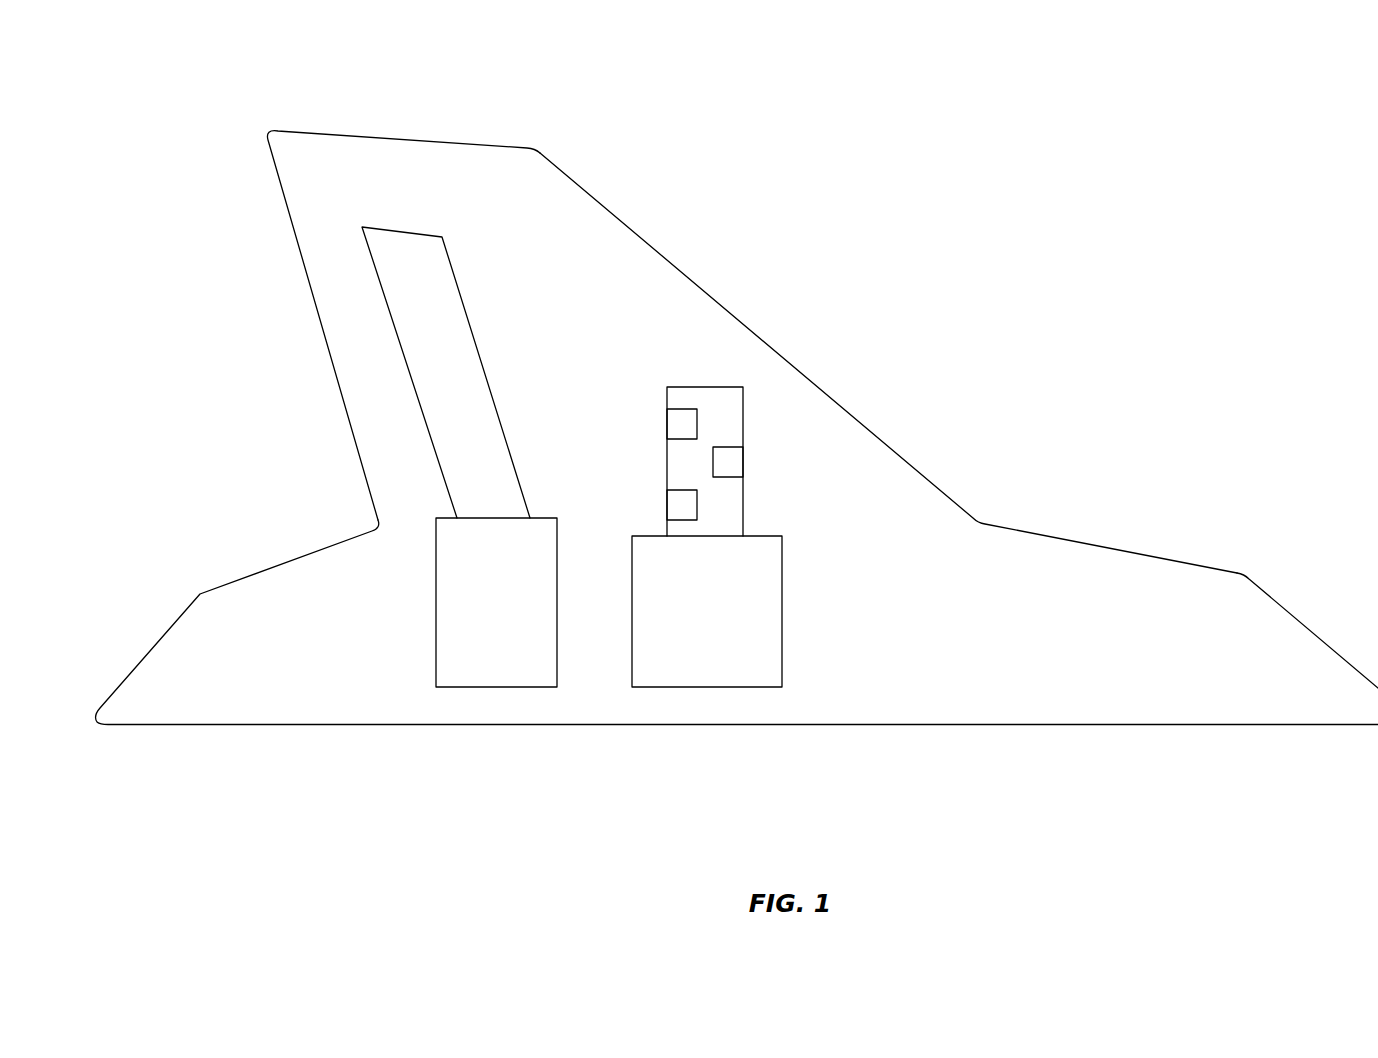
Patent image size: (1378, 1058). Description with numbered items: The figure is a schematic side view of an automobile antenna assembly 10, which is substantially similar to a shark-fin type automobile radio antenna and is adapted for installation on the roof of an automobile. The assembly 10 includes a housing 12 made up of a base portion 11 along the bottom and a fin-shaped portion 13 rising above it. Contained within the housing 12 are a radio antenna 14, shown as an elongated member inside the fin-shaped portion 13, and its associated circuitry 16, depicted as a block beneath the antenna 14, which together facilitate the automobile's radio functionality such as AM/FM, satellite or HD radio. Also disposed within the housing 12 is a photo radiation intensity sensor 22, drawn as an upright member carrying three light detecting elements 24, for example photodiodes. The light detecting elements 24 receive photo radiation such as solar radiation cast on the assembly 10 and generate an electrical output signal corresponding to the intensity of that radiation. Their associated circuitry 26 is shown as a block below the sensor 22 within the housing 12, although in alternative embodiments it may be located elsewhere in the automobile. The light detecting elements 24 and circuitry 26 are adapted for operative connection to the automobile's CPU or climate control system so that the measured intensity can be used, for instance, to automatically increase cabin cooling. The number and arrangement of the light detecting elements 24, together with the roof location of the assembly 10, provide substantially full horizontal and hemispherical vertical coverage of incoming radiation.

The automobile antenna assembly 10 is at (955, 272).
The base portion 11 is at (1175, 598).
The housing 12 is at (942, 488).
The fin-shaped portion 13 is at (330, 153).
The radio antenna 14 is at (407, 230).
The circuitry 16 is at (483, 616).
The photo radiation intensity sensor 22 is at (680, 371).
The light detecting elements 24 is at (675, 423).
The circuitry 26 is at (694, 618).